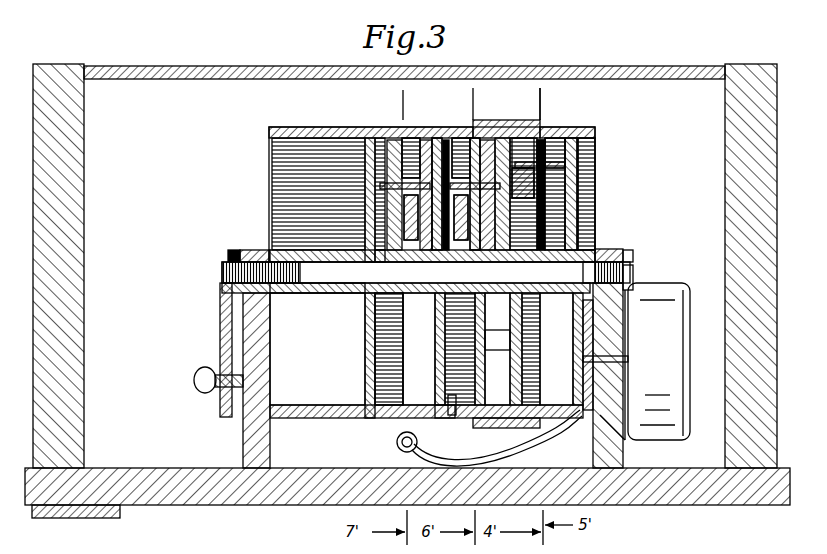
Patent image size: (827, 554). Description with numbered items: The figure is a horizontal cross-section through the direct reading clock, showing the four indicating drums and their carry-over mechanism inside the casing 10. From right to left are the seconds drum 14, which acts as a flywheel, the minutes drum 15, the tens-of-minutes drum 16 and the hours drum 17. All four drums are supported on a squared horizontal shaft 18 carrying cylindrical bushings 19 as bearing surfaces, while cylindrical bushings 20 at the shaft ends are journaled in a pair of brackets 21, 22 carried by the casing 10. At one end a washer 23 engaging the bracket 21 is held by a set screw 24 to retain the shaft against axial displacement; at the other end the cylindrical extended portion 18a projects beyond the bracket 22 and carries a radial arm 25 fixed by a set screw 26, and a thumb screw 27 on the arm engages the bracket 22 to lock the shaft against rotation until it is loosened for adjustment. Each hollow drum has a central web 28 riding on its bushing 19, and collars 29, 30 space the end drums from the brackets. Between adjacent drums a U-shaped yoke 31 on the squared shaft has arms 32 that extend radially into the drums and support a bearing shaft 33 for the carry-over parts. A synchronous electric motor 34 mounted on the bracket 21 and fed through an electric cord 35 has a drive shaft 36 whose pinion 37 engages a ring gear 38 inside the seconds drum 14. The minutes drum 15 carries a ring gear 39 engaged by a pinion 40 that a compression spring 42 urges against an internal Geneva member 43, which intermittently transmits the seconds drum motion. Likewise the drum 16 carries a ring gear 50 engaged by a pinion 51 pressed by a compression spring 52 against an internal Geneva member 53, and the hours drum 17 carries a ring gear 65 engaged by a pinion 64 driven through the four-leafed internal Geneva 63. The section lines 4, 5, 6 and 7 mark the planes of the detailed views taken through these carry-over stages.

The section line 4- 4 is at (538, 103).
The section line 5- 5 is at (542, 110).
The section line 6- 6 is at (471, 103).
The section line 7- 7 is at (401, 103).
The casing 10 is at (222, 505).
The drum 14 is at (598, 170).
The drum 15 is at (492, 428).
The drum 16 is at (441, 419).
The drum 17 is at (333, 419).
The shaft 18 is at (322, 270).
The extended portion 18a is at (226, 268).
The cylindrical bushings 19 is at (352, 294).
The cylindrical bushings 20 is at (256, 250).
The bracket 21 is at (606, 448).
The bracket 22 is at (252, 432).
The washer 23 is at (631, 256).
The set screw 24 is at (633, 276).
The radial arm 25 is at (220, 326).
The set screw 26 is at (234, 251).
The thumb screw 27 is at (194, 383).
The web 28 is at (365, 354).
The collar 29 is at (598, 262).
The collar 30 is at (295, 295).
The U-shaped yoke 31 is at (445, 296).
The arms 32 is at (473, 263).
The bearing shaft 33 is at (575, 135).
The synchronous electric motor 34 is at (688, 283).
The electric cord 35 is at (543, 443).
The drive shaft 36 is at (628, 358).
The pinion 37 is at (618, 428).
The ring gear 38 is at (597, 150).
The ring gear 39 is at (510, 338).
The pinion 40 is at (547, 132).
The compression spring 42 is at (520, 131).
The internal Geneva member 43 is at (560, 132).
The ring gear 50 is at (452, 400).
The pinion 51 is at (462, 140).
The compression spring 52 is at (455, 250).
The internal Geneva member 53 is at (530, 250).
The internal Geneva 63 is at (418, 250).
The pinion 64 is at (392, 136).
The ring gear 65 is at (389, 405).